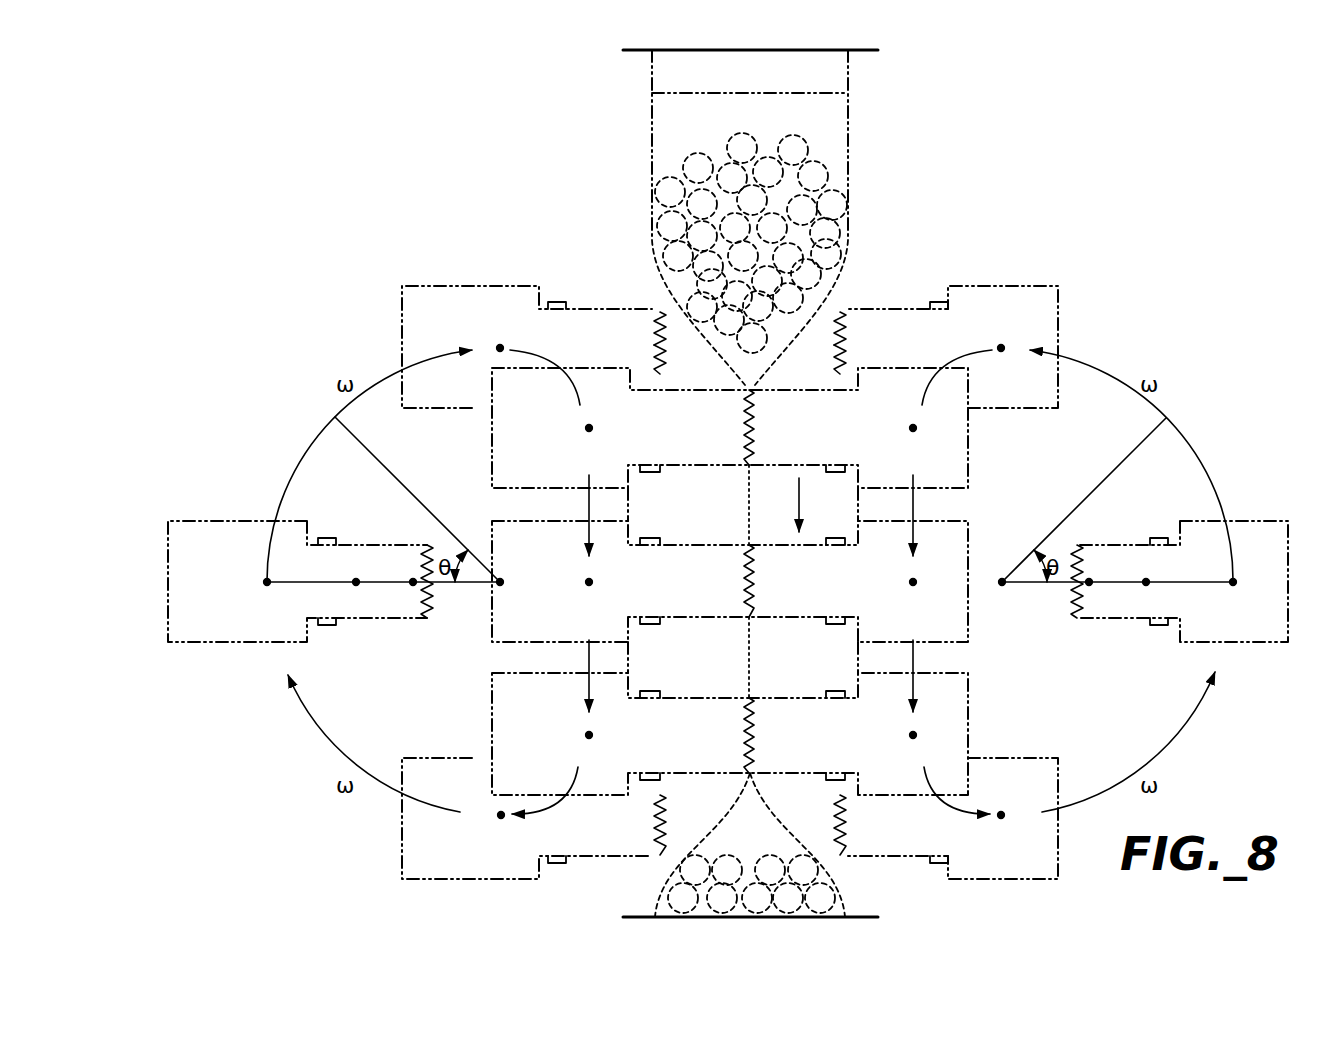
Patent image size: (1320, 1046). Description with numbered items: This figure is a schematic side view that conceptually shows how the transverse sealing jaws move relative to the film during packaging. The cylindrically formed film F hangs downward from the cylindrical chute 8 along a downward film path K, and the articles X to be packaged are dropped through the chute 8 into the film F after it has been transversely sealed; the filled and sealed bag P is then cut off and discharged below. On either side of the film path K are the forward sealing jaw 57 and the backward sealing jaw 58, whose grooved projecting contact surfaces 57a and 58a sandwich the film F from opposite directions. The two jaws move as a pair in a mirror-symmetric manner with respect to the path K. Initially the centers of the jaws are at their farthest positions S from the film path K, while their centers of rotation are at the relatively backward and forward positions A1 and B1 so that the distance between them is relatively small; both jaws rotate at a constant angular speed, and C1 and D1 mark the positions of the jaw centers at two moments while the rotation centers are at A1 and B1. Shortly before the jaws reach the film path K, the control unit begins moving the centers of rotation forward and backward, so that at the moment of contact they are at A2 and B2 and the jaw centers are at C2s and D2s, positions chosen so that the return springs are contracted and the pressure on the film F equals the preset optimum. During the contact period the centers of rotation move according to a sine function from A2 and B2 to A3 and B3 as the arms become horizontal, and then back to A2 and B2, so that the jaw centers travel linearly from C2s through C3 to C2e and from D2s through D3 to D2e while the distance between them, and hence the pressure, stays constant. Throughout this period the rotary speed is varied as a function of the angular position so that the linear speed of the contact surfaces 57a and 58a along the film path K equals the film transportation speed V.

The cylindrical chute 8 is at (833, 67).
The cylindrically formed film F is at (852, 183).
The articles X is at (657, 222).
The forward sealing jaw 57 is at (632, 320).
The contact surface of forward sealing jaw 57a is at (667, 355).
The backward sealing jaw 58 is at (868, 320).
The contact surface of backward sealing jaw 58a is at (833, 355).
The film path K is at (740, 581).
The film transportation speed V is at (812, 505).
The bag P is at (843, 900).
The farthest positions S is at (748, 582).
The initial position of center of rotation A A1 is at (437, 506).
The second position of center of rotation A A2 is at (400, 597).
The third position of center of rotation A A3 is at (347, 597).
The second position of center of rotation B B2 is at (1097, 597).
The third position of center of rotation B B3 is at (1147, 597).
The position of center of forward sealing jaw C1 is at (533, 582).
The start-of-contact position of forward jaw center C2s is at (614, 428).
The mid-contact position of forward jaw center C3 is at (608, 535).
The end-of-contact position of forward jaw center C2e is at (615, 694).
The position of center of backward sealing jaw D1 is at (969, 582).
The start-of-contact position of backward jaw center D2s is at (887, 428).
The mid-contact position of backward jaw center D3 is at (892, 535).
The end-of-contact position of backward jaw center D2e is at (887, 694).